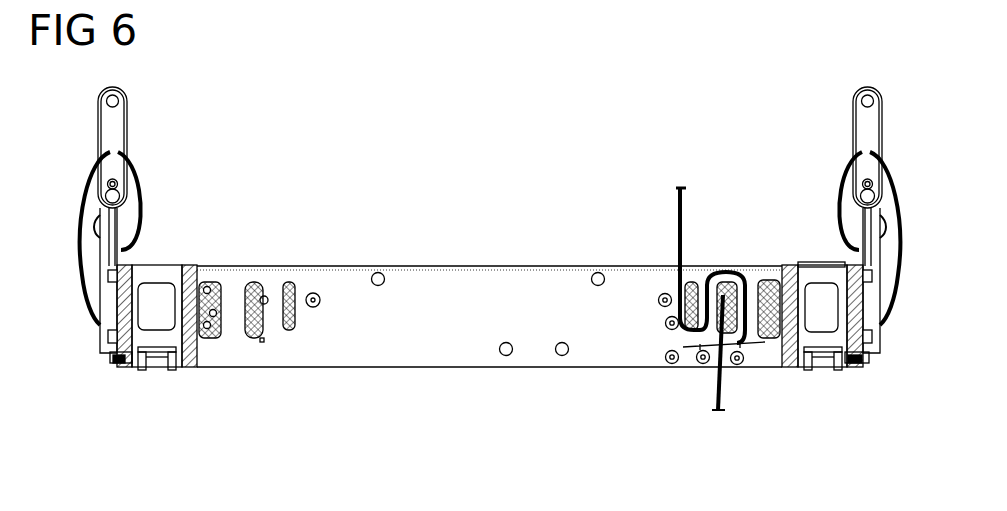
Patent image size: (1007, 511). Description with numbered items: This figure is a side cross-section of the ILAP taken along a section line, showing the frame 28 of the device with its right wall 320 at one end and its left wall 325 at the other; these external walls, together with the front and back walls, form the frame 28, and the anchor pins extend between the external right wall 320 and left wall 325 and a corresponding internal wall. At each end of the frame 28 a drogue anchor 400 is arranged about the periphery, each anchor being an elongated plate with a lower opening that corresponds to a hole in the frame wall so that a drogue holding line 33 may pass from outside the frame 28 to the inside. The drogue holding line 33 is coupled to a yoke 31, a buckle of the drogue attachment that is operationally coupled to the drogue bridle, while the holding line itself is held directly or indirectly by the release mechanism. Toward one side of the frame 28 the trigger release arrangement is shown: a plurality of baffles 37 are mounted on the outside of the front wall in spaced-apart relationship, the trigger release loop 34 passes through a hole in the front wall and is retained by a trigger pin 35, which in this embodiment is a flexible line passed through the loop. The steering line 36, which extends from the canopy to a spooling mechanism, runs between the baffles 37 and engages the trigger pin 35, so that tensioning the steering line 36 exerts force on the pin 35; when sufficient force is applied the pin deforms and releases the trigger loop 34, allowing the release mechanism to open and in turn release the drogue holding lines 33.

The frame 28 is at (404, 222).
The yoke 31 is at (117, 145).
The drogue holding line 33 is at (839, 180).
The trigger release loop 34 is at (703, 357).
The trigger pin 35 is at (683, 350).
The steering line 36 is at (675, 210).
The baffle 37 is at (775, 342).
The drogue anchor 400 is at (129, 238).
The right wall 320 is at (860, 372).
The left wall 325 is at (121, 356).